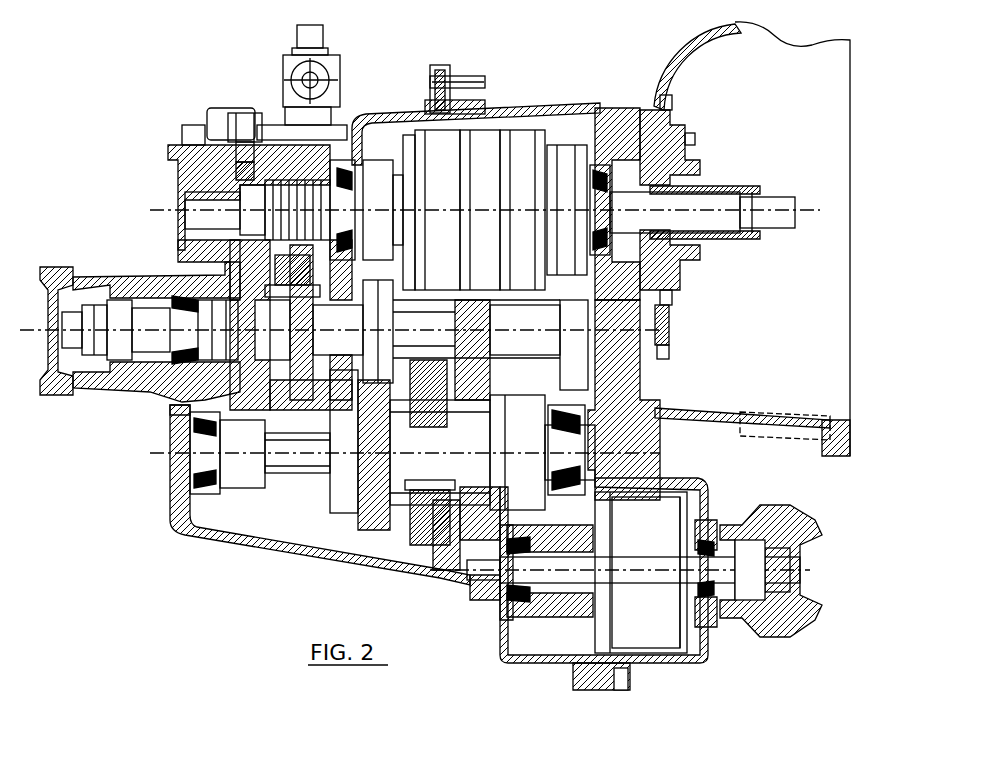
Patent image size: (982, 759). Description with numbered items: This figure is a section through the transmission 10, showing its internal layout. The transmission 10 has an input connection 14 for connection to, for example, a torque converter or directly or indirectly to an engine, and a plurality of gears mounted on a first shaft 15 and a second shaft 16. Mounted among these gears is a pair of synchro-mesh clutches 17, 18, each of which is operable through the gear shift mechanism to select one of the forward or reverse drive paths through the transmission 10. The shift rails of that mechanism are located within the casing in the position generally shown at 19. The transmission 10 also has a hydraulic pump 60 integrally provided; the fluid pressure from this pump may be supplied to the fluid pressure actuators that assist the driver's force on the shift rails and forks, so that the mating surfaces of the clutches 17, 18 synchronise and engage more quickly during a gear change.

The transmission 10 is at (236, 537).
The input connection 14 is at (748, 192).
The first shaft 15 is at (552, 340).
The second shaft 16 is at (590, 432).
The synchro-mesh clutch 17 is at (422, 520).
The synchro-mesh clutch 18 is at (222, 410).
The shift rail location 19 is at (190, 505).
The hydraulic pump 60 is at (668, 138).